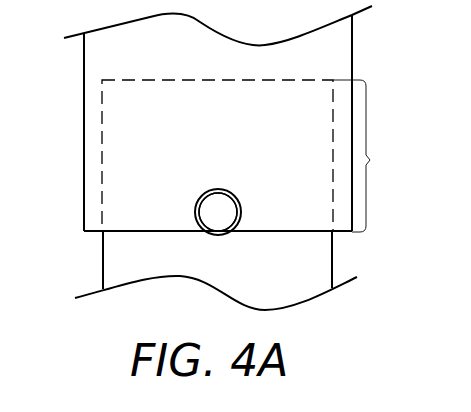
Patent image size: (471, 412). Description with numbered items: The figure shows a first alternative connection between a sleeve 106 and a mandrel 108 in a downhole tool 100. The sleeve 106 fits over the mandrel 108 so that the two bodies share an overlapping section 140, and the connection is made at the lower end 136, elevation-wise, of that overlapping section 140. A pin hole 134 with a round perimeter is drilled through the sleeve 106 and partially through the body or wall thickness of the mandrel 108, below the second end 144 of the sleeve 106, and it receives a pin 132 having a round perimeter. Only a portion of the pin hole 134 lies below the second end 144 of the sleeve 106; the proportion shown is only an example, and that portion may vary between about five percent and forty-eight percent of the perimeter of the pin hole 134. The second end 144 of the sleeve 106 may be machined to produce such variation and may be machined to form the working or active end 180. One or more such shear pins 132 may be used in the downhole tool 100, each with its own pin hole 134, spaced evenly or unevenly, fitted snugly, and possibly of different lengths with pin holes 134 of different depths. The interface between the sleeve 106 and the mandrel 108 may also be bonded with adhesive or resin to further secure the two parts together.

The downhole tool 100 is at (380, 51).
The sleeve 106 is at (178, 54).
The mandrel 108 is at (292, 120).
The pin 132 is at (218, 218).
The pin hole 134 is at (198, 200).
The lower end 136 is at (352, 232).
The overlapping section 140 is at (375, 156).
The second end 144 is at (93, 236).
The active end 180 is at (300, 236).